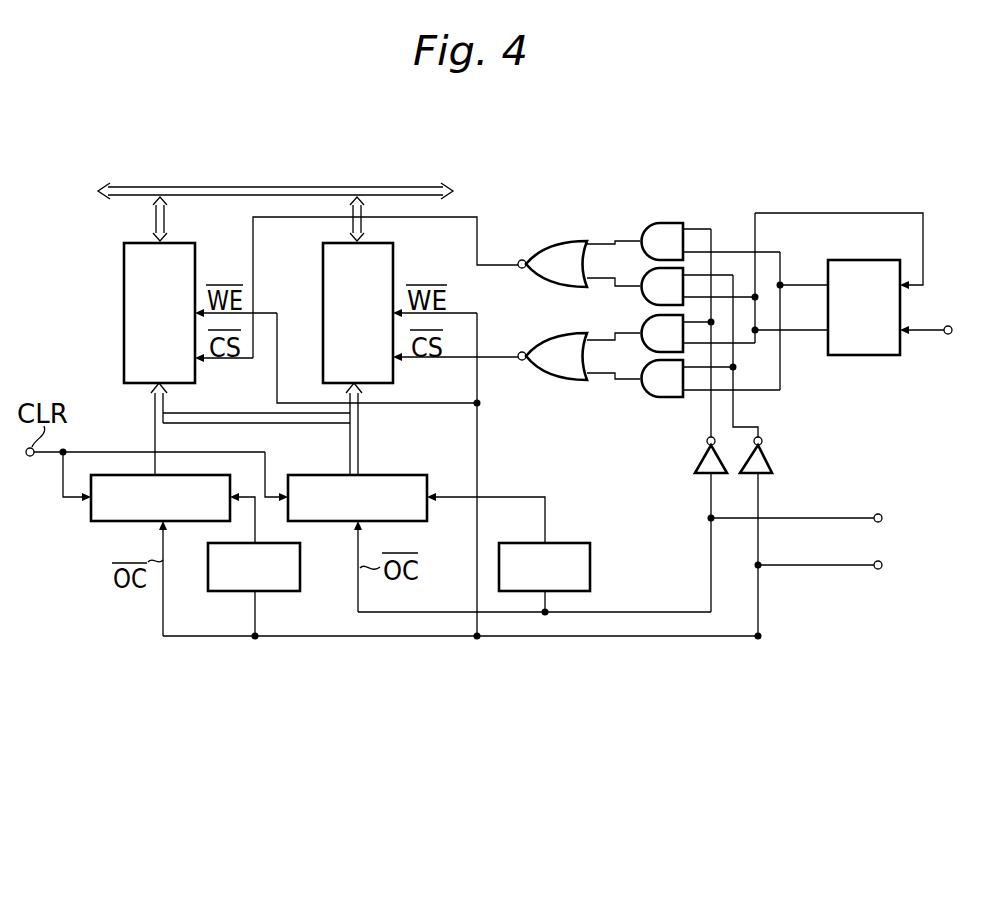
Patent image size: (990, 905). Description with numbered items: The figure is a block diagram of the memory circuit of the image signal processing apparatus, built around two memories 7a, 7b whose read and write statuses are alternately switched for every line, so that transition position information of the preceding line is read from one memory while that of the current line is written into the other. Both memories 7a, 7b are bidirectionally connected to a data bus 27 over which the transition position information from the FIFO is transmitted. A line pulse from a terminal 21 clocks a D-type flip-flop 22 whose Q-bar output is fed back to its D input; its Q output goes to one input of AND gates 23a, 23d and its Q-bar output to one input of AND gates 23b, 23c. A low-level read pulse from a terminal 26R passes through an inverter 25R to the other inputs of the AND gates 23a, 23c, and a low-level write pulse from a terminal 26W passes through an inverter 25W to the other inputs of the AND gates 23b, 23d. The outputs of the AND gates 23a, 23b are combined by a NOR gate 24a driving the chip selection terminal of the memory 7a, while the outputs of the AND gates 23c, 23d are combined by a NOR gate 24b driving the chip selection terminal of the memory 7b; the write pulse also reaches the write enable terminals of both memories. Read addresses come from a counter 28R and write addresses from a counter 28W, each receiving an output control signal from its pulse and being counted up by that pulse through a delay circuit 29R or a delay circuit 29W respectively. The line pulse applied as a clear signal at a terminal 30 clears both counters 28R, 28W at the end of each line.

The data bus 27 is at (273, 187).
The memory 7a is at (124, 262).
The memory 7b is at (323, 265).
The NOR gate 24a is at (548, 241).
The NOR gate 24b is at (548, 337).
The AND gate 23a is at (655, 223).
The AND gate 23b is at (650, 272).
The AND gate 23c is at (645, 321).
The AND gate 23d is at (650, 398).
The D-type flip-flop 22 is at (862, 357).
The terminal 21 is at (948, 335).
The inverter 25R is at (694, 466).
The inverter 25W is at (772, 468).
The terminal 26R is at (882, 518).
The terminal 26W is at (882, 565).
The counter 28W is at (100, 521).
The counter 28R is at (420, 475).
The delay circuit 29W is at (278, 591).
The delay circuit 29R is at (592, 568).
The terminal 30 is at (24, 473).